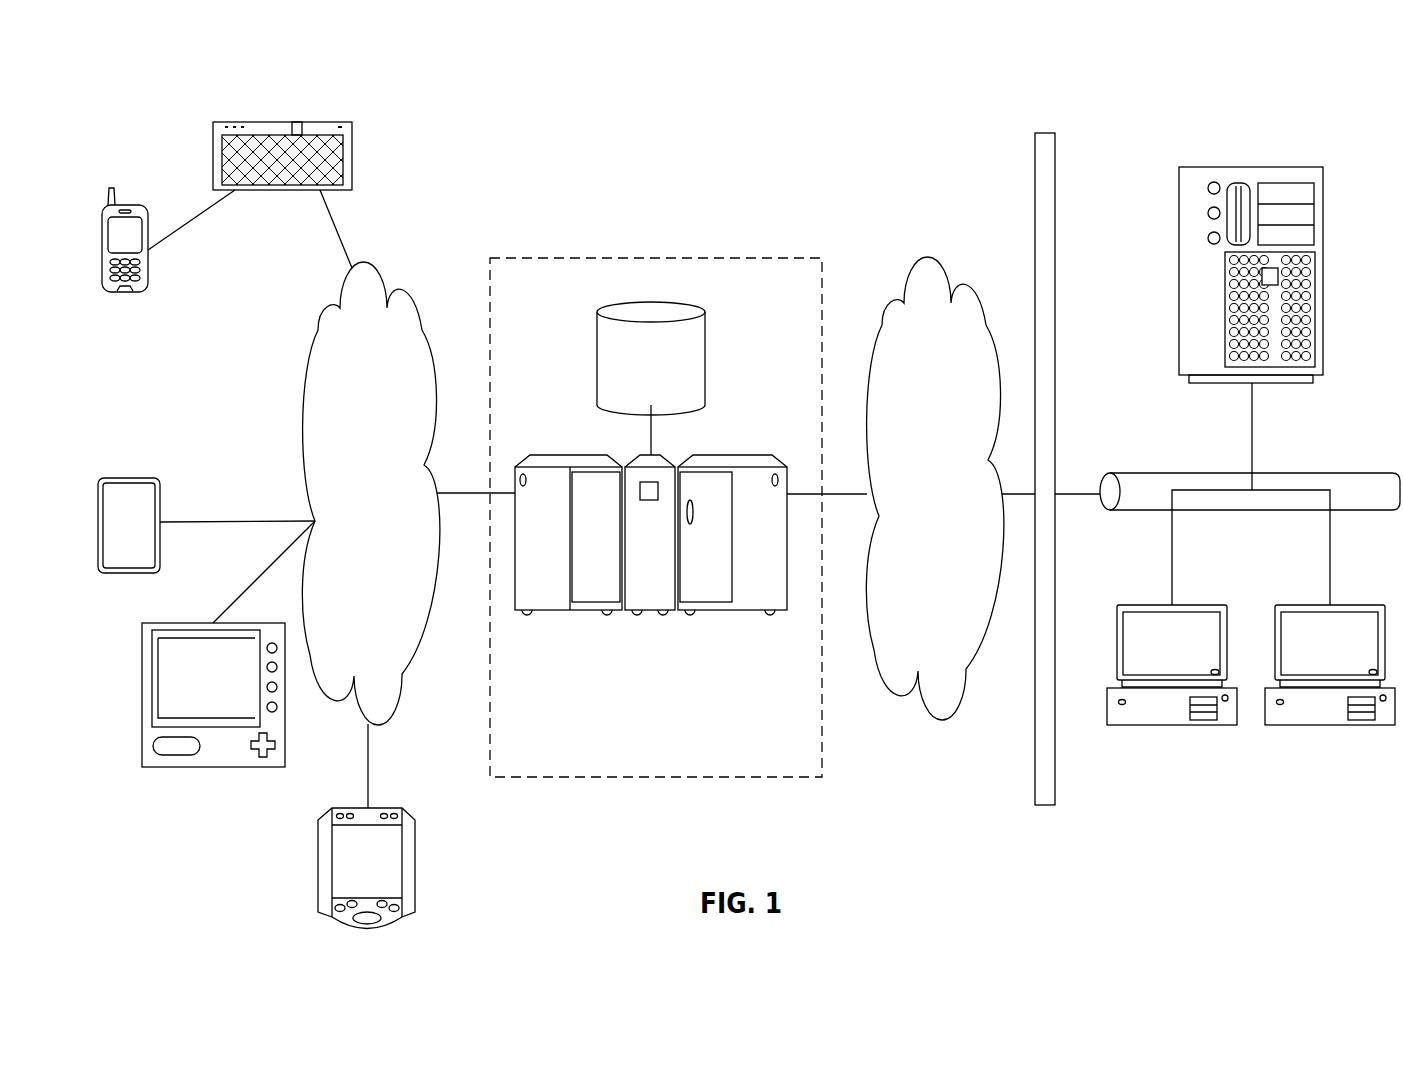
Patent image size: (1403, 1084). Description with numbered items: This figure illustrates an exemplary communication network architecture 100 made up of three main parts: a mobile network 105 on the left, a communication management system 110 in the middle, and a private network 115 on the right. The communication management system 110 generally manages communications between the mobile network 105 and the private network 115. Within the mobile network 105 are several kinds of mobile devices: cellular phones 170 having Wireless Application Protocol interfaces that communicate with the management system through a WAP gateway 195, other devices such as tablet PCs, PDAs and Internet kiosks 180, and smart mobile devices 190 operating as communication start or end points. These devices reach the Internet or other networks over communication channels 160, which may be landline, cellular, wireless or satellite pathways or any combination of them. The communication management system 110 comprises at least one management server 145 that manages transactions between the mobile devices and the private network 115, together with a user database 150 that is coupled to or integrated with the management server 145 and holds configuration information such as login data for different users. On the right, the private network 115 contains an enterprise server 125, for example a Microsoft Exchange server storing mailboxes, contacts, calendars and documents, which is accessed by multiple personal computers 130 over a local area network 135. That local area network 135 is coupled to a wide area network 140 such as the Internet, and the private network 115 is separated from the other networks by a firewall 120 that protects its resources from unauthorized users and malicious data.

The communication network architecture 100 is at (845, 76).
The mobile network 105 is at (188, 430).
The communication management system 110 is at (725, 260).
The private network 115 is at (1239, 822).
The firewall 120 is at (1066, 488).
The enterprise server 125 is at (1251, 255).
The personal computer 130 is at (1251, 676).
The local area network 135 is at (1250, 494).
The wide area network 140 is at (921, 495).
The management server 145 is at (691, 598).
The user database 150 is at (637, 373).
The communication channel 160 is at (355, 501).
The cellular phone 170 is at (125, 253).
The tablet PCs, PDAs and Internet kiosks 180 is at (206, 622).
The smart mobile device 190 is at (366, 885).
The WAP gateway 195 is at (265, 165).